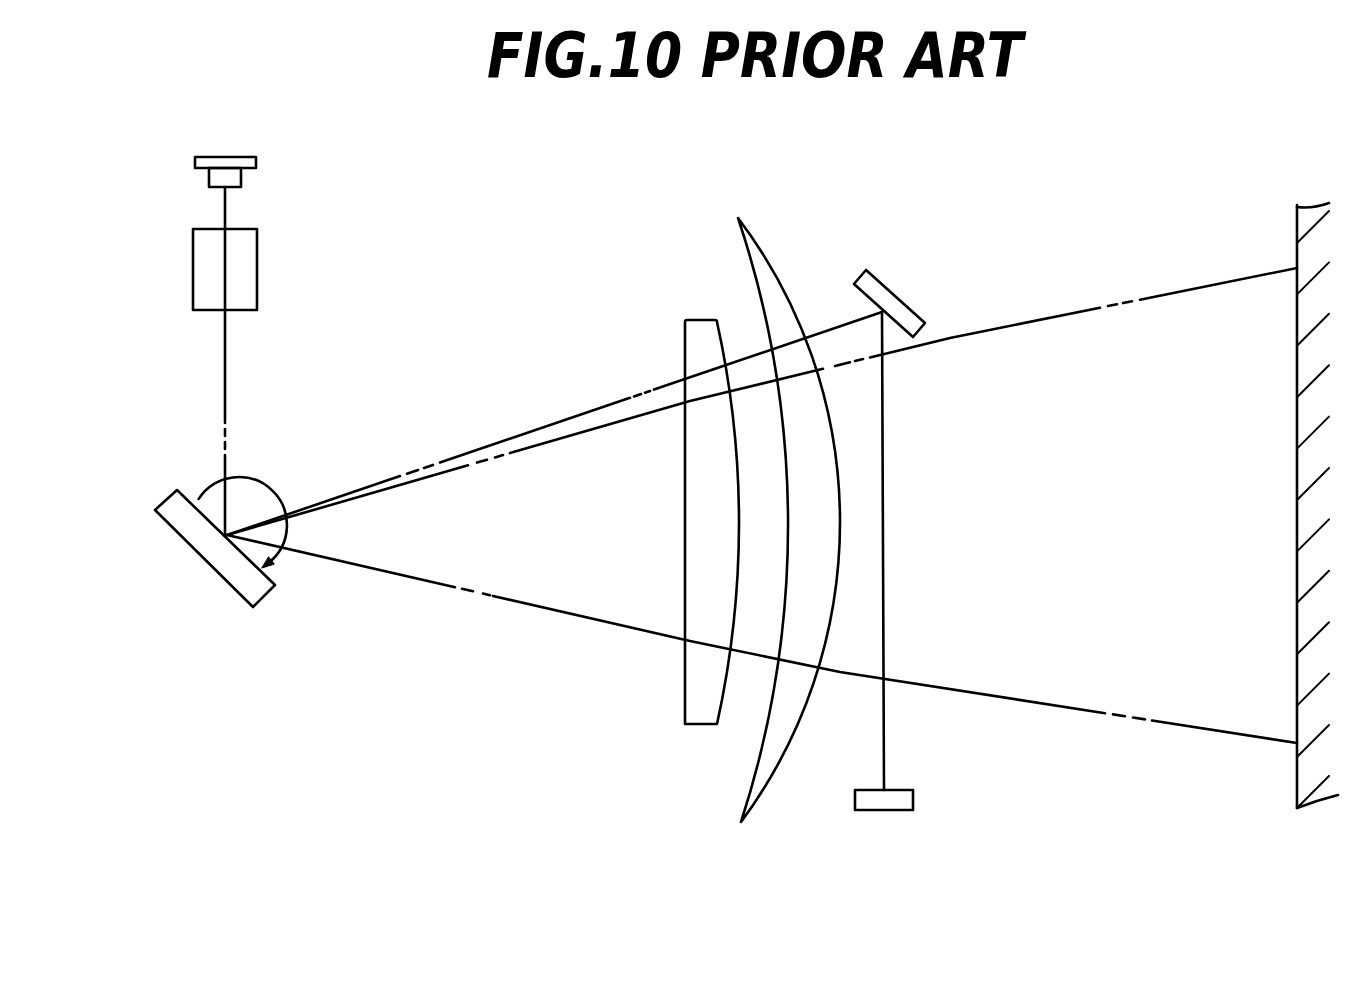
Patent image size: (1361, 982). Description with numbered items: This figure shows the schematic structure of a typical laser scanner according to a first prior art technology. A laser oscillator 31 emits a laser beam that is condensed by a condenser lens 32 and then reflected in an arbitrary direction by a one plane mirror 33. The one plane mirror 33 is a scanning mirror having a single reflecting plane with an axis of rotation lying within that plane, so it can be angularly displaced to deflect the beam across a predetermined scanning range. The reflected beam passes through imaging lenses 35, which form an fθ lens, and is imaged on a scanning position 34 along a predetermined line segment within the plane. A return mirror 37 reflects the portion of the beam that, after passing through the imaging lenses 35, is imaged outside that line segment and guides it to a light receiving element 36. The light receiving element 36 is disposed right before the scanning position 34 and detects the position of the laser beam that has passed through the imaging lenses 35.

The laser oscillator 31 is at (240, 162).
The condenser lens 32 is at (247, 263).
The one plane mirror 33 is at (178, 510).
The scanning position 34 is at (1295, 303).
The imaging lenses 35 is at (778, 725).
The light receiving element 36 is at (887, 803).
The return mirror 37 is at (875, 288).